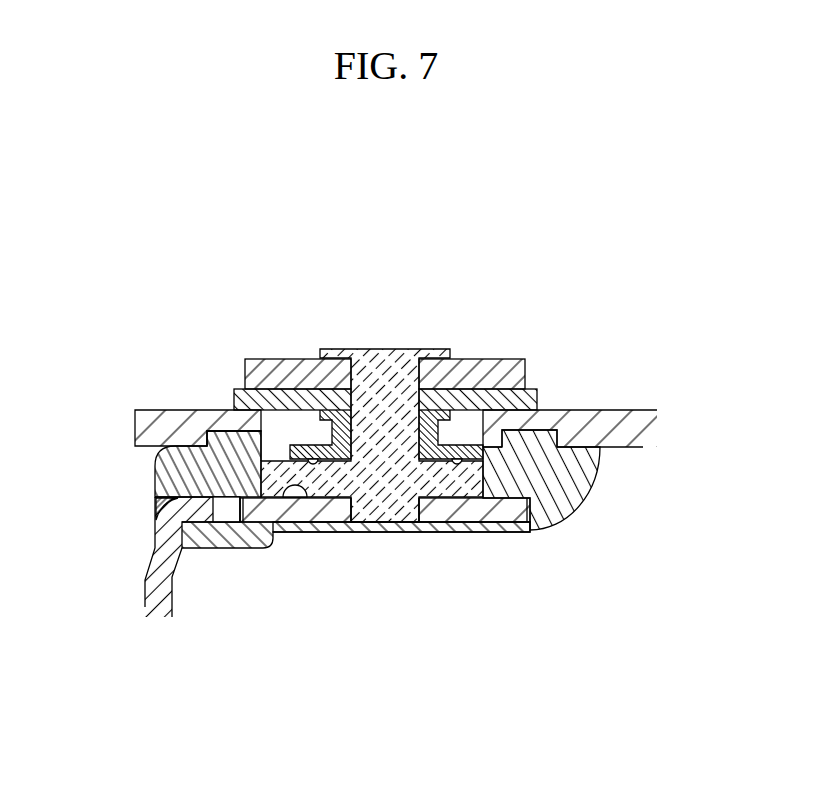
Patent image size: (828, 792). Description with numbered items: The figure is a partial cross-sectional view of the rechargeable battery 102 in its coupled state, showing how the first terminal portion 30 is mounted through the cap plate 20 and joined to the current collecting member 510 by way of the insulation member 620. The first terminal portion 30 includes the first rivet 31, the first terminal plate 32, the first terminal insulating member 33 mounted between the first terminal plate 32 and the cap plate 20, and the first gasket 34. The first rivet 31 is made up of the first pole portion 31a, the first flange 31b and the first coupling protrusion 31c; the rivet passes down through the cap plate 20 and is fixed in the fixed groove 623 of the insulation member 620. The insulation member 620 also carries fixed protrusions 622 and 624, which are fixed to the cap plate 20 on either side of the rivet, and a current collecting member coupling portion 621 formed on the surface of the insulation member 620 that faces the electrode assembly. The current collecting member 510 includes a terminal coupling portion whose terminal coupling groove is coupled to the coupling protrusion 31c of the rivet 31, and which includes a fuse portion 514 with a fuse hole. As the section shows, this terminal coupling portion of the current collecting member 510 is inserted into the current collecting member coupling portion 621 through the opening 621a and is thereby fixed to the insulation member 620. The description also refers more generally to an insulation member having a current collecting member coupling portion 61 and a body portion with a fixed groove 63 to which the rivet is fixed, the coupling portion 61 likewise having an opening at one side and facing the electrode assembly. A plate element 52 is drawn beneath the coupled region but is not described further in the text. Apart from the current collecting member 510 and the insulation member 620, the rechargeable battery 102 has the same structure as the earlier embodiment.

The rechargeable battery 102 is at (383, 226).
The cap plate 20 is at (634, 410).
The first terminal portion 30 is at (411, 434).
The first rivet 31 is at (385, 524).
The first pole portion 31a is at (382, 420).
The first flange 31b is at (460, 478).
The first coupling protrusion 31c is at (400, 513).
The first terminal plate 32 is at (500, 372).
The first terminal insulating member 33 is at (527, 399).
The first gasket 34 is at (425, 432).
The lower plate 52 is at (255, 516).
The current collecting member coupling portion 61 is at (175, 424).
The fixed groove 63 is at (290, 493).
The current collecting member 510 is at (156, 557).
The fuse portion 514 is at (225, 514).
The insulation member 620 is at (573, 449).
The current collecting member coupling portion 621 is at (193, 550).
The opening 621a is at (157, 500).
The fixed protrusion 622 is at (228, 438).
The fixed groove 623 is at (317, 527).
The fixed protrusion 624 is at (543, 438).